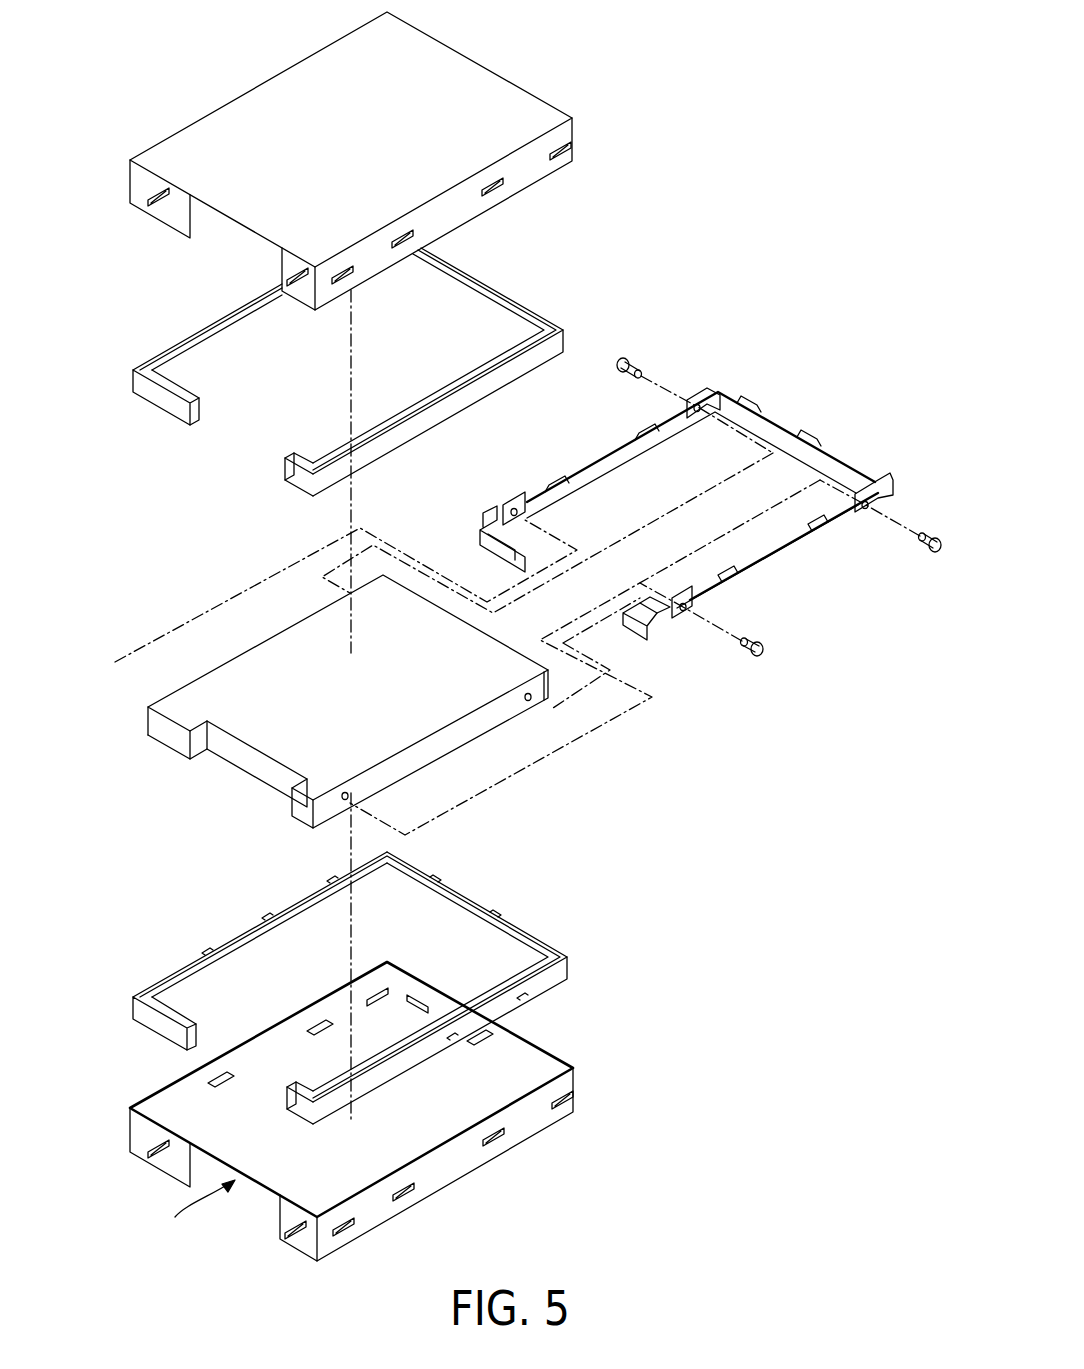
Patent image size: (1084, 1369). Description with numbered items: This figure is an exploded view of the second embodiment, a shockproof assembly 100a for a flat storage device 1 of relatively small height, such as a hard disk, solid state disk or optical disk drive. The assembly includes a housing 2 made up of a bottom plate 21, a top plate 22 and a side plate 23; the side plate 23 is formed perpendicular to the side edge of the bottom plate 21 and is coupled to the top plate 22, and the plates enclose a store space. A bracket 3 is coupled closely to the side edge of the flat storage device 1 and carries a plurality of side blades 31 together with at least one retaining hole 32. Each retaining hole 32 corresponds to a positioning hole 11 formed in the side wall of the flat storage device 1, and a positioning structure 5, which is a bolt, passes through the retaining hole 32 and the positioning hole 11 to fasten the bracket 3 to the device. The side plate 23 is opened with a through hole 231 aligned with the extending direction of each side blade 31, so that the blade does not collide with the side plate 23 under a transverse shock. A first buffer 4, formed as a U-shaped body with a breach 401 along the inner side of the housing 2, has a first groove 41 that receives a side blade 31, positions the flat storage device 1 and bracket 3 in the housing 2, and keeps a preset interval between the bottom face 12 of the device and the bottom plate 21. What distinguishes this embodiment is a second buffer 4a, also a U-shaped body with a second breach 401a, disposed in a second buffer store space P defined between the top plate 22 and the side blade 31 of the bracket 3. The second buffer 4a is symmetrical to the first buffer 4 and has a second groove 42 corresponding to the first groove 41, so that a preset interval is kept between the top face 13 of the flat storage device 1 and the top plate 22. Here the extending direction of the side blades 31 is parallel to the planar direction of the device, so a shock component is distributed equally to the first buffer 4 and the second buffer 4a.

The shockproof assembly 100a is at (745, 232).
The flat storage device 1 is at (226, 740).
The positioning hole 11 is at (343, 798).
The bottom face 12 is at (263, 780).
The top face 13 is at (185, 705).
The housing 2 is at (598, 1093).
The bottom plate 21 is at (250, 1215).
The top plate 22 is at (512, 97).
The side plate 23 is at (453, 1158).
The through hole 231 is at (408, 1192).
The bracket 3 is at (790, 555).
The side blade 31 is at (745, 590).
The retaining hole 32 is at (684, 612).
The first buffer 4 is at (568, 970).
The first groove 41 is at (403, 1047).
The breach 401 is at (205, 1043).
The second buffer 4a is at (565, 331).
The second groove 42 is at (400, 447).
The second breach 401a is at (215, 445).
The positioning structure 5 is at (762, 652).
The second buffer store space P is at (196, 1216).